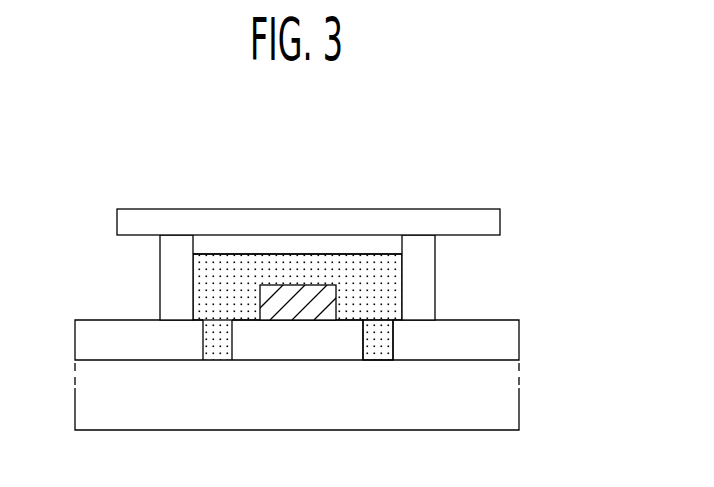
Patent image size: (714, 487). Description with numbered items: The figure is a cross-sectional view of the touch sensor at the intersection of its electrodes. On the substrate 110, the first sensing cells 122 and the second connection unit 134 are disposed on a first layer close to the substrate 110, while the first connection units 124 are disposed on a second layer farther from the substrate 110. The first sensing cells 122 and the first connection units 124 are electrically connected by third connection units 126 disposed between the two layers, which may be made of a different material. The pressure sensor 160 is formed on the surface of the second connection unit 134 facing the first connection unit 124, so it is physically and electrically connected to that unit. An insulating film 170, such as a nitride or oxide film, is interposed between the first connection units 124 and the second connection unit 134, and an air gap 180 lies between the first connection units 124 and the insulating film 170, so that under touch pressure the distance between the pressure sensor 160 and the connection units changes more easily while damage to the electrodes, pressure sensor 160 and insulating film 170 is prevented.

The substrate 110 is at (513, 398).
The first sensing cells 122 is at (513, 342).
The first connection units 124 is at (492, 222).
The third connection units 126 is at (423, 262).
The second connection unit 134 is at (350, 328).
The pressure sensor 160 is at (300, 298).
The insulating film 170 is at (223, 291).
The air gap 180 is at (368, 248).